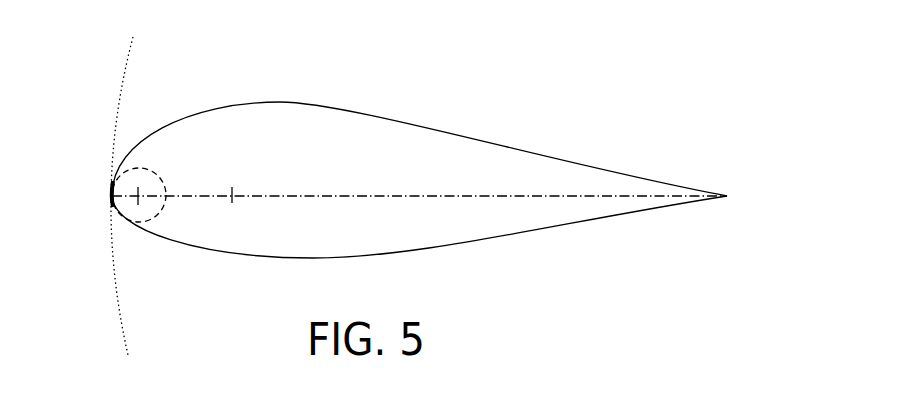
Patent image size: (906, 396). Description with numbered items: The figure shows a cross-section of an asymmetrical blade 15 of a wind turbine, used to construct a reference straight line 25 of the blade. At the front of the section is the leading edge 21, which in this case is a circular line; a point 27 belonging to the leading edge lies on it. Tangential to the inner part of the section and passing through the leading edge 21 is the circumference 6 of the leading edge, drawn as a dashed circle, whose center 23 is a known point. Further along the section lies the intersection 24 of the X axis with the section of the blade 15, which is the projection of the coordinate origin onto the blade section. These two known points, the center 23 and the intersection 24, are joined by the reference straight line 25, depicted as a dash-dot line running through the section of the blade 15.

The circumference of the leading edge 6 is at (147, 170).
The blade 15 is at (310, 142).
The leading edge 21 is at (112, 192).
The center of the circumference of the leading edge 23 is at (137, 200).
The intersection of the X axis with the section of the blade 24 is at (230, 200).
The reference straight line of the blade 25 is at (187, 196).
The point belonging to the leading edge 27 is at (112, 205).